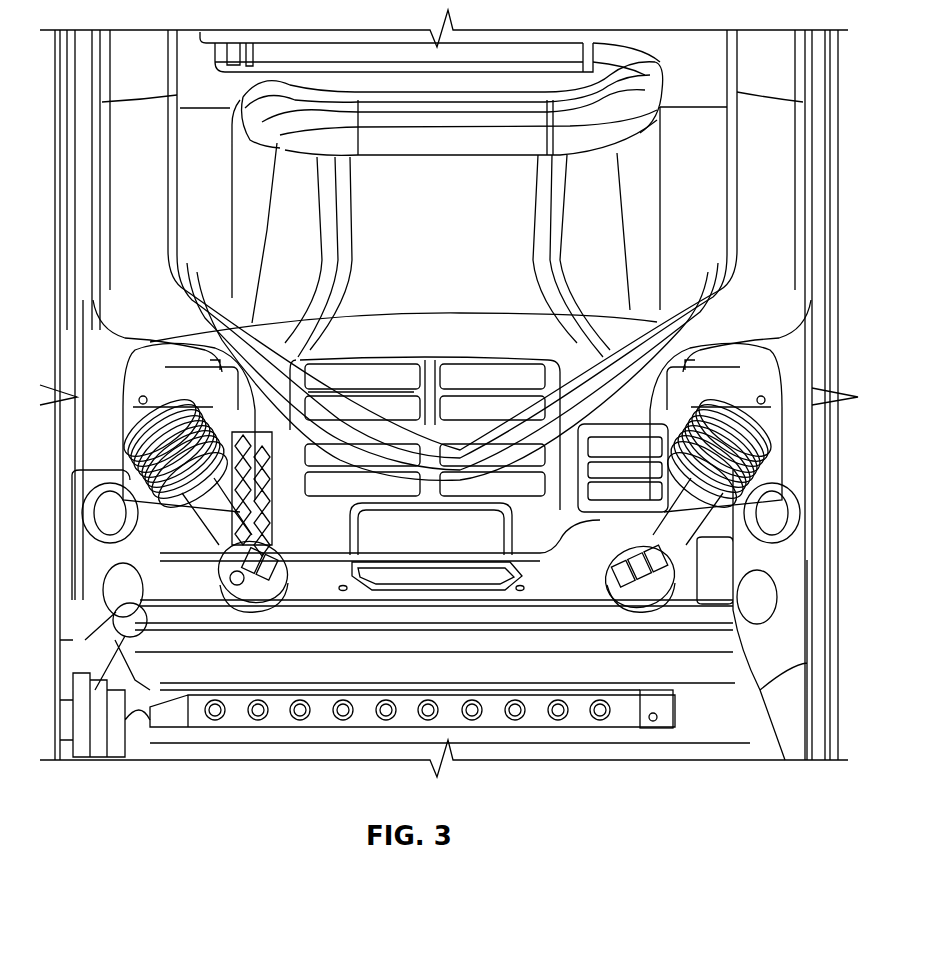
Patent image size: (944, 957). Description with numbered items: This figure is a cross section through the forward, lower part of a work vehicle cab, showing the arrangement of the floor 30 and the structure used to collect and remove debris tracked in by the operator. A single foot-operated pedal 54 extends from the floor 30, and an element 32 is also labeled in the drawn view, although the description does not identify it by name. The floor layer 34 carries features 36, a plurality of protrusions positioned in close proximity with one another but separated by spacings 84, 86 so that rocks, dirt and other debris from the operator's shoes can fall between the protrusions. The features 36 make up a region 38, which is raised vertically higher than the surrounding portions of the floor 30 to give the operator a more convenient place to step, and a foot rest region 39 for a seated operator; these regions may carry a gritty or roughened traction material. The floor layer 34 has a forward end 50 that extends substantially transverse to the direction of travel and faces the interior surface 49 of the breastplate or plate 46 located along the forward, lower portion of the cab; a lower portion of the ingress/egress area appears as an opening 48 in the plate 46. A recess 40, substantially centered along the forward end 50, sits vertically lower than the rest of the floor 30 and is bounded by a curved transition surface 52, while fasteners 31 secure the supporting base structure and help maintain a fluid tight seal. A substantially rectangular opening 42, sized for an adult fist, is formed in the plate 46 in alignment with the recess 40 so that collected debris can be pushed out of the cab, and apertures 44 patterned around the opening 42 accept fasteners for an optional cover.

The floor 30 is at (548, 548).
The fasteners 31 is at (300, 582).
The seat back 32 is at (444, 195).
The floor layer 34 is at (560, 552).
The features 36 is at (478, 360).
The region 38 is at (607, 360).
The foot rest region 39 is at (557, 540).
The recess 40 is at (444, 537).
The opening 42 is at (444, 585).
The apertures 44 is at (333, 588).
The plate 46 is at (173, 587).
The opening 48 is at (300, 603).
The interior surface 49 is at (473, 587).
The forward end 50 is at (527, 513).
The transition surface 52 is at (365, 533).
The foot-operated pedal 54 is at (360, 392).
The spacings 84 is at (390, 383).
The spacings 86 is at (430, 377).